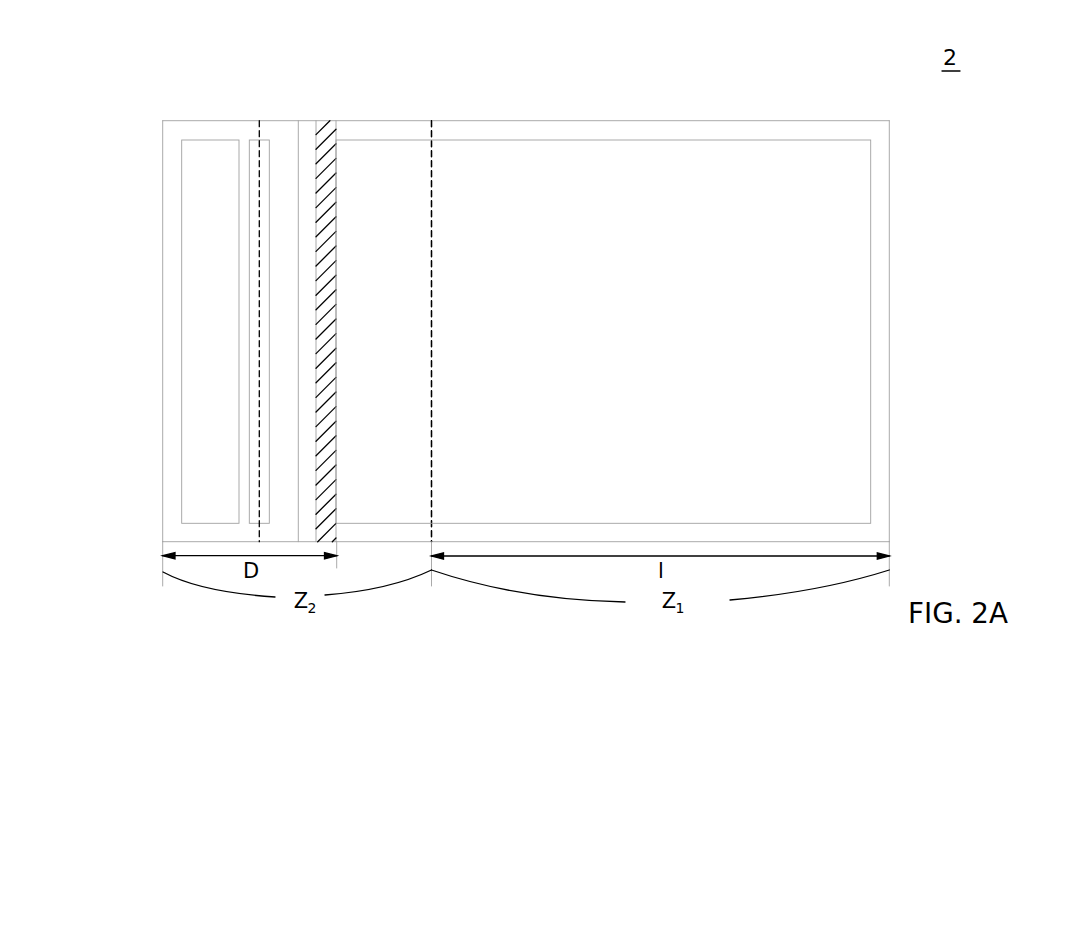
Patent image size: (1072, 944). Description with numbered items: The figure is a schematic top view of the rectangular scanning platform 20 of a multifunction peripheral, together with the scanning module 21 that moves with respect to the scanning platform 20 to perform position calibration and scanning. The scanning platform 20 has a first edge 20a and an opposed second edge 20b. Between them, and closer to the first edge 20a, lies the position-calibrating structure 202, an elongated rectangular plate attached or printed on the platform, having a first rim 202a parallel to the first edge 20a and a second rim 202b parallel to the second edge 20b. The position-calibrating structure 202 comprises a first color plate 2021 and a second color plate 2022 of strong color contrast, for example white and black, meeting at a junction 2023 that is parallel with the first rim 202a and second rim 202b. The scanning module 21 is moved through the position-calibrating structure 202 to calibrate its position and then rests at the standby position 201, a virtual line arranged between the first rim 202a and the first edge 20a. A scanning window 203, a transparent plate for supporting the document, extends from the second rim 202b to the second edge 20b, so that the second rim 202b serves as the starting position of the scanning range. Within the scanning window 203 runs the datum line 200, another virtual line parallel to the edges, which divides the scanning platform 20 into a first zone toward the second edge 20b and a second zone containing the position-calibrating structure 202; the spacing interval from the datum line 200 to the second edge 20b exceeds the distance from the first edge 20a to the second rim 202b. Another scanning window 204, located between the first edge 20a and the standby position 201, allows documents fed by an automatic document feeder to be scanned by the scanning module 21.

The scanning platform 20 is at (795, 110).
The first edge 20a is at (163, 331).
The second edge 20b is at (890, 232).
The datum line 200 is at (432, 120).
The standby position 201 is at (298, 128).
The position-calibrating structure 202 is at (393, 67).
The first rim 202a is at (260, 120).
The second rim 202b is at (337, 147).
The first color plate 2021 is at (308, 130).
The second color plate 2022 is at (327, 129).
The junction 2023 is at (319, 130).
The scanning window 203 is at (628, 162).
The scanning window 204 is at (210, 172).
The scanning module 21 is at (253, 437).